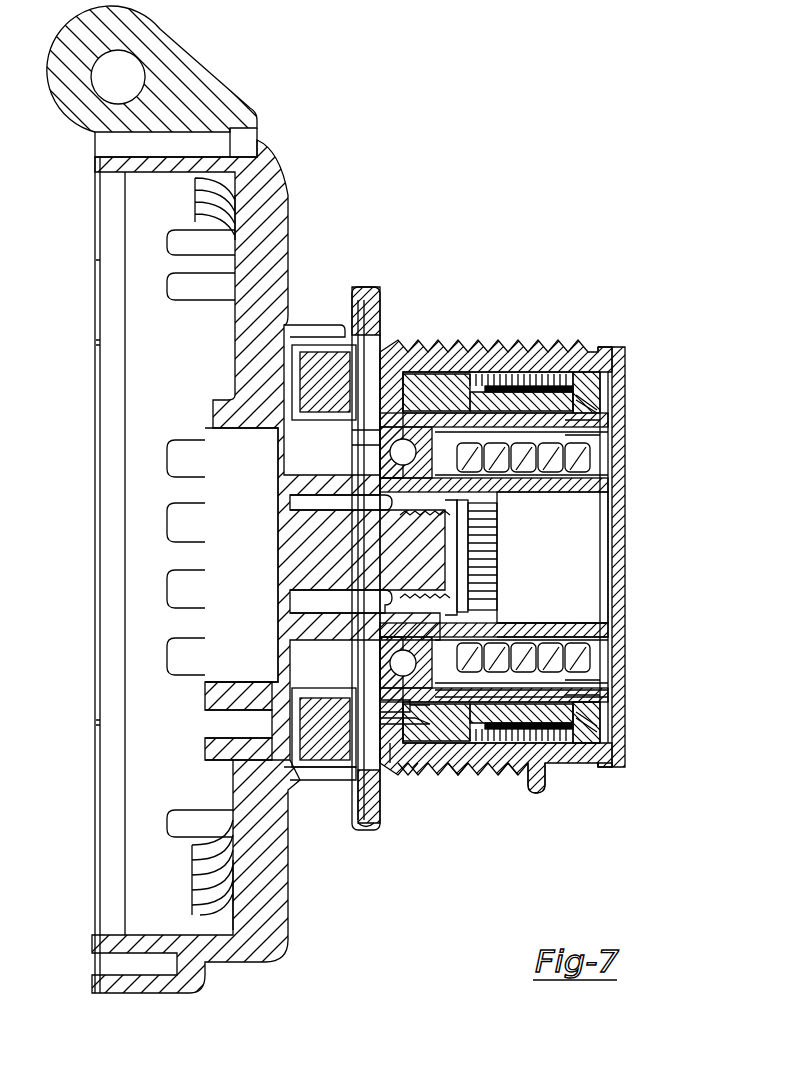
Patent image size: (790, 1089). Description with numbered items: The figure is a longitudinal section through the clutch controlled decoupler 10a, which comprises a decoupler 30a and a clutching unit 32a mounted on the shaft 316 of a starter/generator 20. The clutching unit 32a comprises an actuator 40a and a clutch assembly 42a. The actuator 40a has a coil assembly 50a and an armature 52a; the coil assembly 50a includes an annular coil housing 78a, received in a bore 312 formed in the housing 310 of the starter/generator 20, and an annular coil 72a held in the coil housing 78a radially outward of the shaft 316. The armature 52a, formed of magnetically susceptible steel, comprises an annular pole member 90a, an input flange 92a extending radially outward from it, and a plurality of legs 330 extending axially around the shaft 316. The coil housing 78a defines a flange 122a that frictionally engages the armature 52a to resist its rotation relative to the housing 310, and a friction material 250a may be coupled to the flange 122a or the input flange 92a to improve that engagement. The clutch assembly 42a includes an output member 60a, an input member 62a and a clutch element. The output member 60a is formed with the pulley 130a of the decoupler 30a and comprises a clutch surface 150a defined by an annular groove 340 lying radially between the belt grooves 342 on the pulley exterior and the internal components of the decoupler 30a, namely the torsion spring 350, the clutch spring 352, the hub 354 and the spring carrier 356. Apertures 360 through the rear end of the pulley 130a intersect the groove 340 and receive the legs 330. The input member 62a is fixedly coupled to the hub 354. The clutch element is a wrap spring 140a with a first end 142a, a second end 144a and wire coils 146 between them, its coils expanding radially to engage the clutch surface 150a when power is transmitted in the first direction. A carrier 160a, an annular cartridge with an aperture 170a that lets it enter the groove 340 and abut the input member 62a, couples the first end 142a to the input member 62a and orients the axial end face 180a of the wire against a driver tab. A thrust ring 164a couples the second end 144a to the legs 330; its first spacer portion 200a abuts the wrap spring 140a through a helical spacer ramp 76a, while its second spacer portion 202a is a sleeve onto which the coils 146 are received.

The starter/generator 20 is at (213, 60).
The housing 310 is at (272, 206).
The clutch controlled decoupler 10a is at (358, 228).
The friction material 250a is at (378, 325).
The flange 122a is at (310, 350).
The annular groove 340 is at (365, 363).
The output member 60a is at (422, 362).
The clutching unit 32a is at (573, 374).
The clutch assembly 42a is at (497, 368).
The wrap spring 140a is at (557, 354).
The second end 144a is at (470, 382).
The wire coils 146 is at (523, 382).
The first end 142a is at (588, 382).
The axial end face 180a is at (603, 355).
The carrier 160a is at (590, 392).
The second spacer portion 202a is at (572, 407).
The input member 62a is at (603, 467).
The actuator 40a is at (281, 513).
The coil assembly 50a is at (330, 380).
The armature 52a is at (363, 408).
The decoupler 30a is at (553, 484).
The shaft 316 is at (348, 560).
The spring carrier 356 is at (443, 602).
The torsion spring 350 is at (558, 640).
The hub 354 is at (583, 638).
The coil housing 78a is at (297, 445).
The thrust ring 164a is at (375, 455).
The first spacer portion 200a is at (375, 708).
The apertures 360 is at (388, 705).
The coil 72a is at (297, 705).
The bore 312 is at (273, 757).
The clutch spring 352 is at (558, 683).
The aperture 170a is at (590, 698).
The clutch surface 150a is at (605, 765).
The pulley 130a is at (544, 782).
The belt grooves 342 is at (508, 772).
The helical spacer ramp 76a is at (460, 738).
The legs 330 is at (403, 740).
The pole member 90a is at (373, 765).
The input flange 92a is at (367, 800).